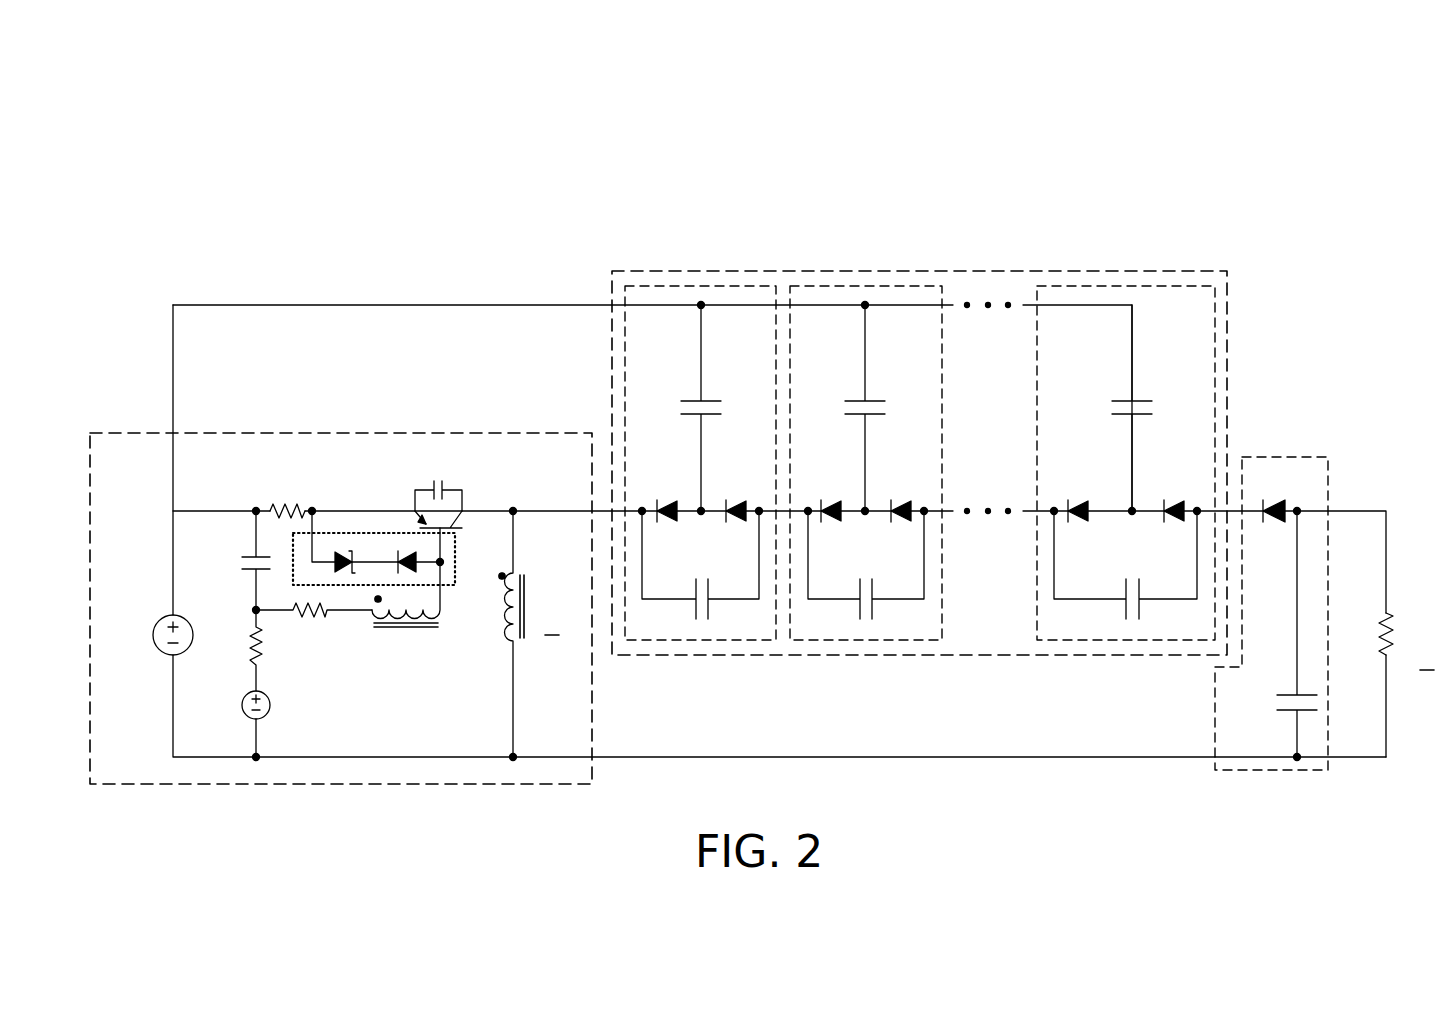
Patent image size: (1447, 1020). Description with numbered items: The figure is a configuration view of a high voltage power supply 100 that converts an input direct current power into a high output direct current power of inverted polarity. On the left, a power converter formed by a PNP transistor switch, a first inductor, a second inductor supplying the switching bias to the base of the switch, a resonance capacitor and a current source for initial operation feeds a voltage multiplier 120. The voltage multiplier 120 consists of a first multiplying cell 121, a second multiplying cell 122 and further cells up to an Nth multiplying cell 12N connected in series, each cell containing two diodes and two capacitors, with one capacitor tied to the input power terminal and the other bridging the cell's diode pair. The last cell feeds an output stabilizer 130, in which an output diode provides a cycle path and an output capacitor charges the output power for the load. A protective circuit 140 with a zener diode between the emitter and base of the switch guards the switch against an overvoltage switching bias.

The high voltage power supply 100 is at (764, 458).
The voltage multiplier 120 is at (988, 271).
The first multiplying cell 121 is at (700, 286).
The second multiplying cell 122 is at (865, 286).
The Nth multiplying cell 12N is at (1125, 286).
The output stabilizer 130 is at (1285, 457).
The protective circuit 140 is at (453, 587).